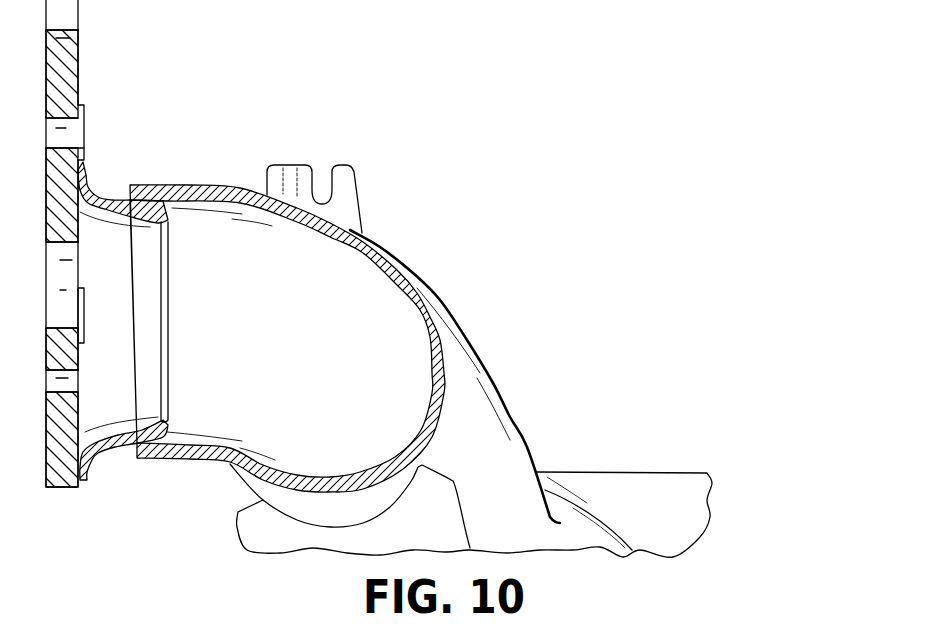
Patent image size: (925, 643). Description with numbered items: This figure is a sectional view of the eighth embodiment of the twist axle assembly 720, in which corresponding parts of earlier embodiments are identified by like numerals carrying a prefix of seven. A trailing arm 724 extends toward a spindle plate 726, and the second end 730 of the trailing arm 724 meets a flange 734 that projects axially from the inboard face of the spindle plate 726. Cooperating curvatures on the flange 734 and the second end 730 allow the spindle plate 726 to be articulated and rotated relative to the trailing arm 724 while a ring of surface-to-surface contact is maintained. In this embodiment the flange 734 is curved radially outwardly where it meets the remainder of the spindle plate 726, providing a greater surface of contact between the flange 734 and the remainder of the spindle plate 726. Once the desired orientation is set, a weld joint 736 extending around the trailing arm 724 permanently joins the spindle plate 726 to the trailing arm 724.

The twist axle assembly 720 is at (440, 232).
The trailing arm 724 is at (502, 380).
The spindle plate 726 is at (86, 70).
The second end 730 is at (156, 459).
The flange 734 is at (108, 449).
The weld joint 736 is at (84, 166).